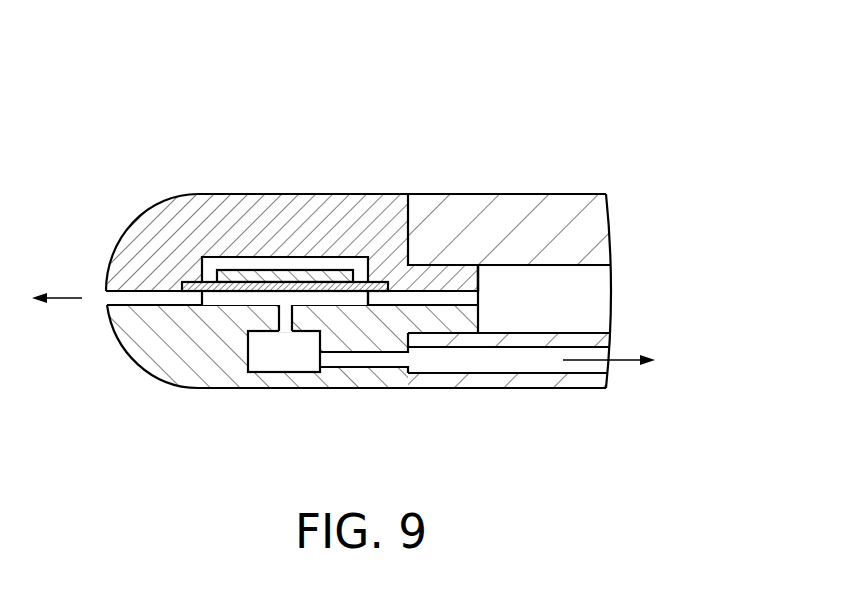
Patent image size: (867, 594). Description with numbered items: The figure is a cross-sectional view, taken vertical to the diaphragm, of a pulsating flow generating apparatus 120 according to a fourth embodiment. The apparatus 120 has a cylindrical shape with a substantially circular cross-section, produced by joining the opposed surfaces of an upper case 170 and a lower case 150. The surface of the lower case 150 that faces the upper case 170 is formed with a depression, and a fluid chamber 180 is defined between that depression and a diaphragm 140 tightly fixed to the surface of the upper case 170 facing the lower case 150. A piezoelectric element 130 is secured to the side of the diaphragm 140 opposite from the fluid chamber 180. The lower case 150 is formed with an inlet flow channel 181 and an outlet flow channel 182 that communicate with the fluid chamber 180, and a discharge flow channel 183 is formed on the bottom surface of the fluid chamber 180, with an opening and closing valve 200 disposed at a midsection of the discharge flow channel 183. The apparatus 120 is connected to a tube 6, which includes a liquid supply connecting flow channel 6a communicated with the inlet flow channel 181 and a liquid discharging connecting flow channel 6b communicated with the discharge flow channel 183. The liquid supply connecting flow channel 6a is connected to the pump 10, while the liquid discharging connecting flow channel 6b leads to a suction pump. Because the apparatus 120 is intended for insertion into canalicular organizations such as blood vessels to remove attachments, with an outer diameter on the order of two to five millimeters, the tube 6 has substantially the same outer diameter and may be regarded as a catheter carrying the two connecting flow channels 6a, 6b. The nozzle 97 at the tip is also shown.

The pulsating flow generating apparatus 120 is at (503, 87).
The outlet flow channel 182 is at (150, 294).
The upper case 170 is at (228, 195).
The piezoelectric element 130 is at (292, 257).
The diaphragm 140 is at (355, 268).
The inlet flow channel 181 is at (437, 298).
The tube 6 is at (494, 194).
The liquid supply connecting flow channel 6a is at (538, 280).
The liquid discharging connecting flow channel 6b is at (521, 360).
The pump 10 is at (578, 298).
The nozzle 97 is at (106, 300).
The lower case 150 is at (217, 388).
The fluid chamber 180 is at (228, 300).
The opening and closing valve 200 is at (290, 362).
The discharge flow channel 183 is at (292, 317).